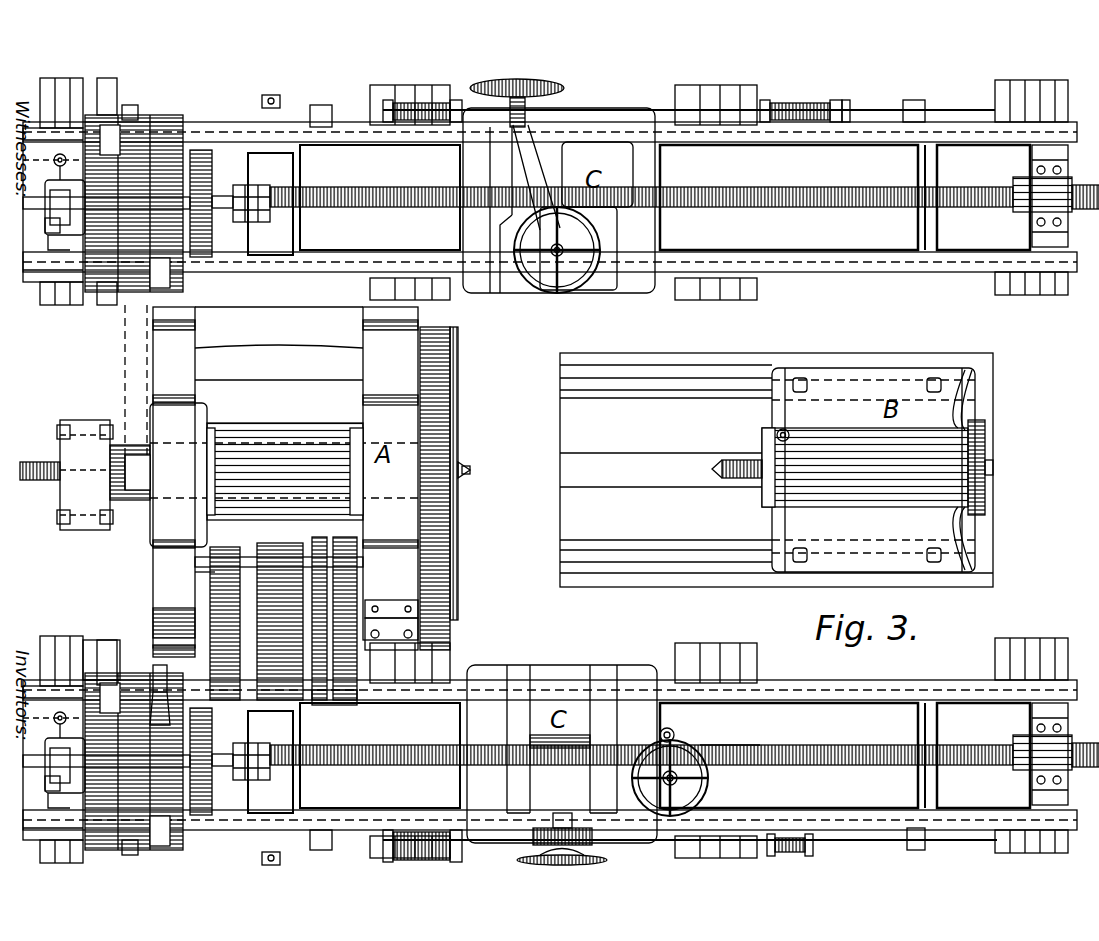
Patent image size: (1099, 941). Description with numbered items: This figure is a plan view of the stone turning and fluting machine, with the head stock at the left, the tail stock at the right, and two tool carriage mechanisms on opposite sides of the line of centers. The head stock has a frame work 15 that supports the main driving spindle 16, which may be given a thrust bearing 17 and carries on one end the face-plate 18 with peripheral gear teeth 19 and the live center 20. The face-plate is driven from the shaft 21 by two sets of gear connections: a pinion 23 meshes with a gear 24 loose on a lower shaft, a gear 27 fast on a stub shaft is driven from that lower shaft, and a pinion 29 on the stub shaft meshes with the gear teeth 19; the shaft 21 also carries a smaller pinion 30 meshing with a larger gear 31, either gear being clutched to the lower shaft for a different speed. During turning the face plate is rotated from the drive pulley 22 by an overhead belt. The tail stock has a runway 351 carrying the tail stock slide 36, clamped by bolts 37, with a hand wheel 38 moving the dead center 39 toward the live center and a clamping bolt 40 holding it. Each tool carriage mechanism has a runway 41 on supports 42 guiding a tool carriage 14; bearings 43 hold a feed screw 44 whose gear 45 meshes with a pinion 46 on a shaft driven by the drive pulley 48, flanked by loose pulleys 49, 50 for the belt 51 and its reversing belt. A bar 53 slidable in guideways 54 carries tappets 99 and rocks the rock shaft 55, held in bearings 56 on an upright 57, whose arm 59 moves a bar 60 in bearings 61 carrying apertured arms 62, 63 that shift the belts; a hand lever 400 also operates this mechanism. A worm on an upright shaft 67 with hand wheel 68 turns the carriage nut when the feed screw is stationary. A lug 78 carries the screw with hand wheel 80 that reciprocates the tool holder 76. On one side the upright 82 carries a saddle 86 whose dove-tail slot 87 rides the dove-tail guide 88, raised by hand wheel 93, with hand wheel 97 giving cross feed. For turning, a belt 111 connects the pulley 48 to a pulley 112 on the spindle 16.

The tool carriage 14 is at (470, 160).
The frame work 15 is at (363, 352).
The main driving spindle 16 is at (265, 448).
The thrust bearing 17 is at (60, 445).
The face-plate 18 is at (455, 378).
The gear teeth 19 is at (445, 425).
The center 20 is at (472, 470).
The shaft 21 is at (248, 620).
The drive pulley 22 is at (290, 560).
The pinion 23 is at (180, 665).
The gear 24 is at (200, 572).
The gear 27 is at (343, 555).
The pinion 29 is at (455, 630).
The pinion 30 is at (330, 615).
The gear 31 is at (318, 705).
The tail stock slide 36 is at (830, 368).
The bolts 37 is at (935, 375).
The hand wheel 38 is at (985, 440).
The dead center 39 is at (712, 475).
The clamping bolt 40 is at (775, 435).
The runway 41 is at (875, 112).
The supports 42 is at (365, 98).
The bearings 43 is at (238, 225).
The feed screw 44 is at (420, 207).
The gear 45 is at (215, 150).
The pinion 46 is at (215, 198).
The drive pulley 48 is at (120, 135).
The loose pulley 49 is at (100, 305).
The loose pulley 50 is at (185, 130).
The belt 51 is at (45, 222).
The bar 53 is at (320, 108).
The guideways 54 is at (128, 105).
The rock shaft 55 is at (48, 165).
The bearings 56 is at (45, 183).
The upright 57 is at (48, 238).
The arm 59 is at (58, 153).
The bar 60 is at (292, 205).
The bearings 61 is at (285, 214).
The apertured arm 62 is at (170, 297).
The apertured arm 63 is at (115, 160).
The upright shaft 67 is at (705, 750).
The hand wheel 68 is at (652, 765).
The tool holder 76 is at (490, 190).
The lug 78 is at (592, 838).
The hand wheel 80 is at (517, 862).
The upright 82 is at (605, 210).
The saddle 86 is at (525, 290).
The dove-tail slot 87 is at (560, 290).
The dove-tail guide 88 is at (538, 240).
The hand wheel 93 is at (595, 280).
The hand wheel 97 is at (560, 88).
The tappets 99 is at (456, 102).
The belt 111 is at (125, 352).
The pulley 112 is at (125, 505).
The runway 351 is at (730, 352).
The hand lever 400 is at (283, 474).